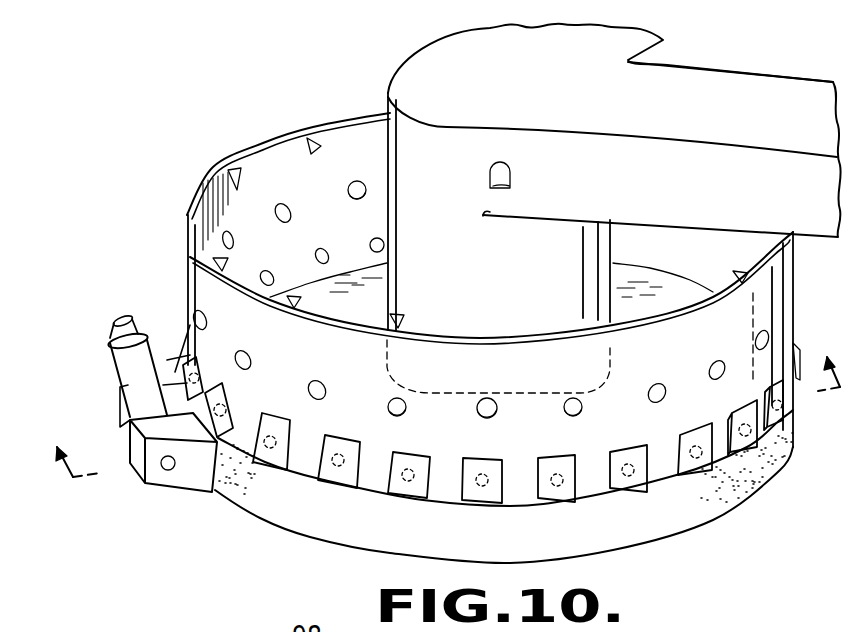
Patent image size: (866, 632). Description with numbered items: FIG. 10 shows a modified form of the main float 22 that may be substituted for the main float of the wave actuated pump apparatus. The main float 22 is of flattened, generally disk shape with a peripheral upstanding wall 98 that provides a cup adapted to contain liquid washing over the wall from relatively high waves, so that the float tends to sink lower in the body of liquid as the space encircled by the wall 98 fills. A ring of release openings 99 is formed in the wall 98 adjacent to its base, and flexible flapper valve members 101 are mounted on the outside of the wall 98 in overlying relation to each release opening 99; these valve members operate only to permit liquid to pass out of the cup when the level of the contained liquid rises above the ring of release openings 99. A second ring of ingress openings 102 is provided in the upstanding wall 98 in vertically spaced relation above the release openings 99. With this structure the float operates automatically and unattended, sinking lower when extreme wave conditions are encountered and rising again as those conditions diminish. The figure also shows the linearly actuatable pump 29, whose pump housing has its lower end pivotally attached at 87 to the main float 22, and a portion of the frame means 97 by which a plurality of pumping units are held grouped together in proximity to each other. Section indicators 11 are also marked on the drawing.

The section line 11 is at (444, 397).
The main float 22 is at (290, 536).
The linearly actuatable pump 29 is at (110, 356).
The pivotal attachment 87 is at (168, 472).
The frame means 97 is at (570, 111).
The peripheral upstanding wall 98 is at (264, 143).
The release openings 99 is at (272, 273).
The flapper valve members 101 is at (423, 499).
The ingress openings 102 is at (333, 181).